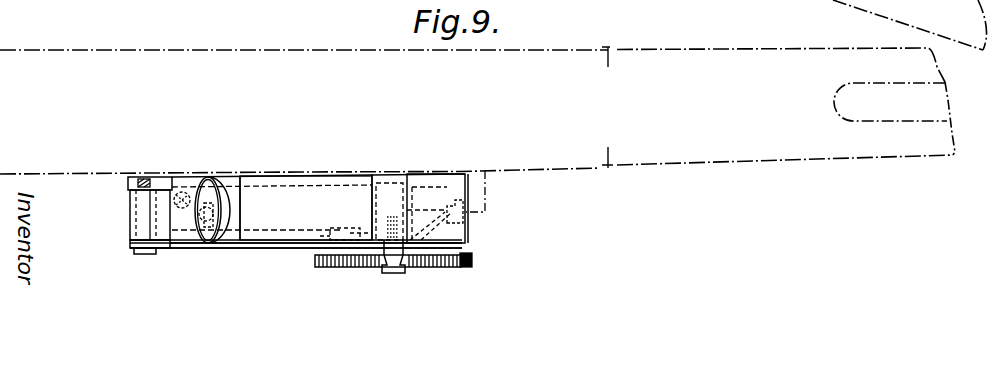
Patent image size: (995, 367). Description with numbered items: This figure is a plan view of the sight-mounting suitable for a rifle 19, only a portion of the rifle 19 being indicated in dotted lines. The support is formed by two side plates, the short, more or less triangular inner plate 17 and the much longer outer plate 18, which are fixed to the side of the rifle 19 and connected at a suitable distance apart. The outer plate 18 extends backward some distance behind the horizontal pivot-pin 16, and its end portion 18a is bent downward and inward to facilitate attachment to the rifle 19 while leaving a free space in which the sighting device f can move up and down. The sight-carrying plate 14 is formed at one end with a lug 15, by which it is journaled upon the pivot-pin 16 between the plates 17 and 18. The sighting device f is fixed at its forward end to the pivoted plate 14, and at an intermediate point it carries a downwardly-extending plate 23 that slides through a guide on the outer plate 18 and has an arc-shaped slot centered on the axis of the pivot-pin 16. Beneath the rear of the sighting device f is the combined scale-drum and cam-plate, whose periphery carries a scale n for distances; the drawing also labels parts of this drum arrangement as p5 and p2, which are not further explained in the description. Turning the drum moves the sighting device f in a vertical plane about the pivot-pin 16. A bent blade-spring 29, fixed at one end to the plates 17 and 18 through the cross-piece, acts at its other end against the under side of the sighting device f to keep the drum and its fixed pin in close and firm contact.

The rifle 19 is at (477, 110).
The lug 15 is at (140, 214).
The inner side plate 17 is at (162, 181).
The pivot-pin 16 is at (150, 248).
The plate 14 is at (184, 208).
The sighting device f is at (306, 208).
The outer side plate 18 is at (245, 243).
The bent blade-spring 29 is at (345, 198).
The downwardly-extending plate 23 is at (345, 237).
The end portion of outer plate 18a is at (472, 218).
The rack p5 is at (362, 262).
The scale or divisions for distances n is at (473, 256).
The pawl stem p2 is at (395, 267).